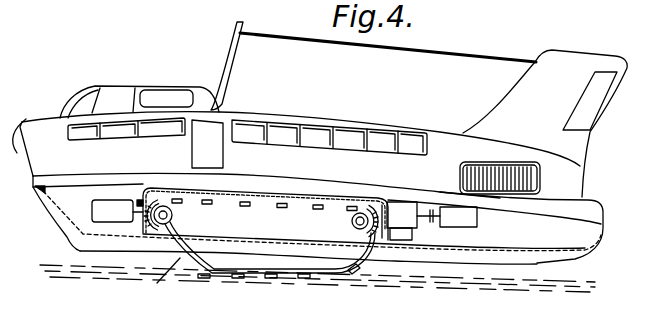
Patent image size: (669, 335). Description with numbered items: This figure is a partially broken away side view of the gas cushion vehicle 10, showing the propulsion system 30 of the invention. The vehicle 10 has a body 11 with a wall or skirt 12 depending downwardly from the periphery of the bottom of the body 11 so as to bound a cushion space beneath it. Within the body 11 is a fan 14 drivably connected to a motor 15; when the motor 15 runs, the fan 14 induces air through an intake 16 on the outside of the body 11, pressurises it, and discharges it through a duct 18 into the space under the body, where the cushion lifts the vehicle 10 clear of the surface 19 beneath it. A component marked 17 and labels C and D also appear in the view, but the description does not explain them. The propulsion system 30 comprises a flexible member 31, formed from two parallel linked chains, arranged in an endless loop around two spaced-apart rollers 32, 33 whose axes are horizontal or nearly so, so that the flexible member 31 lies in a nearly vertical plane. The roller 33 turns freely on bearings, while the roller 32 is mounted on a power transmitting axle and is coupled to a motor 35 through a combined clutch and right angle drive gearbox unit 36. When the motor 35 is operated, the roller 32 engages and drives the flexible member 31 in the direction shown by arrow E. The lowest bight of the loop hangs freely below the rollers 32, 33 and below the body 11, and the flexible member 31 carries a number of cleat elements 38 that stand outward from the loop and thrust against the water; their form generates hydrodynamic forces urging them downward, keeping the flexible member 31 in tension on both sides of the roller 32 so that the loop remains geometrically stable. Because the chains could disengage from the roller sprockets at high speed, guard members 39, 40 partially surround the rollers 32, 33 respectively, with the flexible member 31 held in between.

The vehicle 10 is at (160, 78).
The body 11 is at (308, 176).
The wall or skirt 12 is at (43, 206).
The fan 14 is at (405, 218).
The motor 15 is at (463, 220).
The intake 16 is at (523, 185).
The deck 17 is at (447, 194).
The duct 18 is at (400, 240).
The surface 19 is at (573, 284).
The propulsion system 30 is at (265, 281).
The flexible member 31 is at (241, 204).
The roller 32 is at (173, 220).
The roller 33 is at (352, 221).
The motor 35 is at (110, 200).
The combined clutch and right angle drive gearbox unit 36 is at (155, 236).
The cleat elements 38 is at (240, 283).
The guard member 39 is at (182, 150).
The guard member 40 is at (376, 206).
The control line C is at (124, 200).
The direction of travel D is at (294, 291).
The arrow E is at (303, 264).